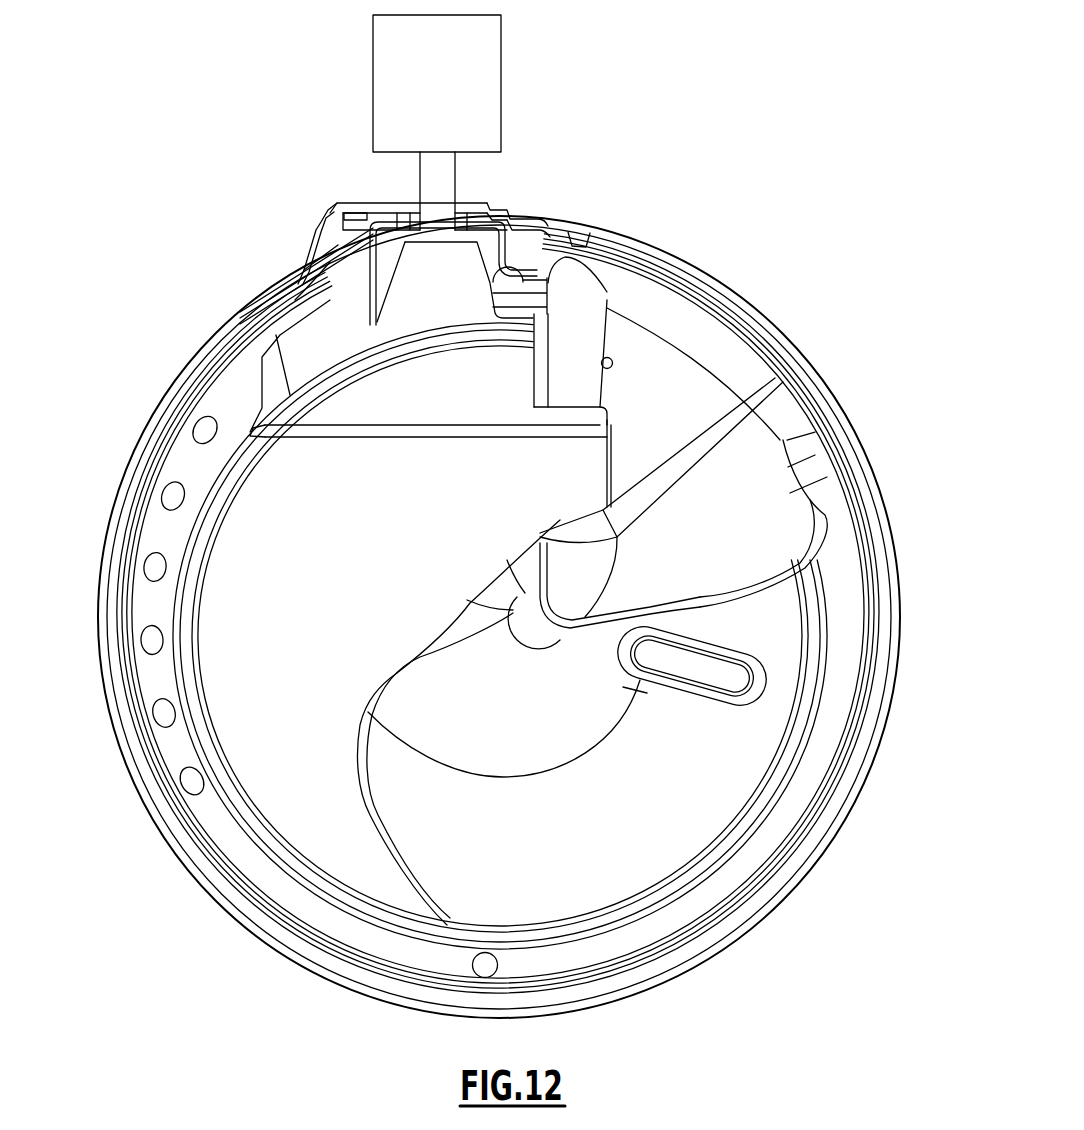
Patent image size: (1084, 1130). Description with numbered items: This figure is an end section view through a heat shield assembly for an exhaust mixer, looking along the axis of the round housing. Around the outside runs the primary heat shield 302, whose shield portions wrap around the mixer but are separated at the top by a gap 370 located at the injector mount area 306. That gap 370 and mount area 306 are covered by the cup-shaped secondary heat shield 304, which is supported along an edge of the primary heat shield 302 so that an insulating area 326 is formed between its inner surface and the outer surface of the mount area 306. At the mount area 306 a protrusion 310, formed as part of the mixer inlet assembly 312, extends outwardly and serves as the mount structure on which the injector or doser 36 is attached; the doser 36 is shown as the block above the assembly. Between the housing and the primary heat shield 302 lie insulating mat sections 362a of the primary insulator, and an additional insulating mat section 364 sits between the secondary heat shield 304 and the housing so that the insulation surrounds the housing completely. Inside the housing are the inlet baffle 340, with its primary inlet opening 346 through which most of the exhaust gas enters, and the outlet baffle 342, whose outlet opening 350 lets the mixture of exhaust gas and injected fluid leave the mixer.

The doser 36 is at (458, 97).
The primary heat shield 302 is at (687, 257).
The secondary heat shield 304 is at (516, 206).
The injector mount area 306 is at (531, 207).
The protrusion 310 is at (487, 200).
The mixer inlet assembly 312 is at (280, 333).
The insulating area 326 is at (550, 232).
The inlet baffle 340 is at (787, 493).
The outlet baffle 342 is at (745, 760).
The primary inlet opening 346 is at (157, 528).
The outlet opening 350 is at (793, 567).
The insulating mat section 362a is at (858, 486).
The additional insulating mat section 364 is at (318, 283).
The gap 370 is at (316, 243).